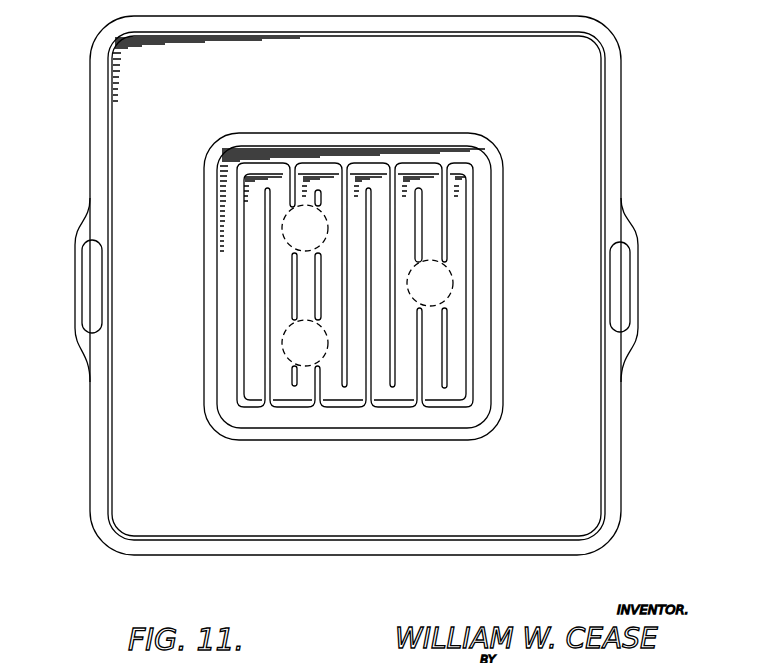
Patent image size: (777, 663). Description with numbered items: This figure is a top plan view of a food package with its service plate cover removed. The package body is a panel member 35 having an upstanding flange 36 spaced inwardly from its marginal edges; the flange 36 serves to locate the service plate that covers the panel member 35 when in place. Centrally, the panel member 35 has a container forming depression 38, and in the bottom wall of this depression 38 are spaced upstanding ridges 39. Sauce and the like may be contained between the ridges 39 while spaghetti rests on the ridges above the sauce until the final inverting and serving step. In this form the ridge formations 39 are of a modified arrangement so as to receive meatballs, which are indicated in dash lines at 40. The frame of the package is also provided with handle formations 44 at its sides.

The panel member 35 is at (582, 129).
The upstanding flange 36 is at (603, 153).
The container forming depression 38 is at (387, 157).
The upstanding ridges 39 is at (447, 207).
The meatballs 40 is at (283, 240).
The handle formations 44 is at (77, 326).